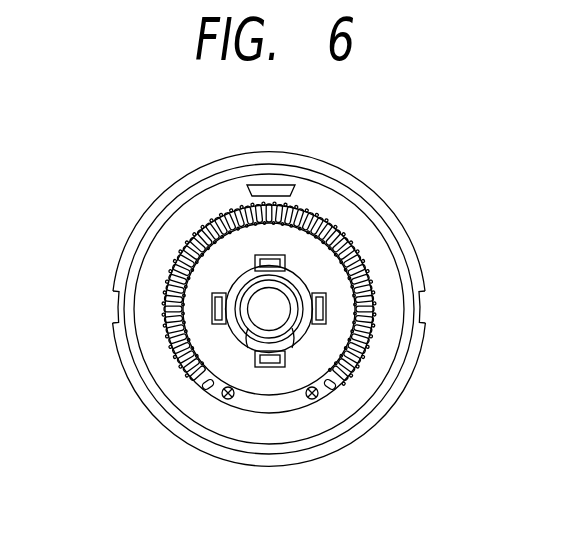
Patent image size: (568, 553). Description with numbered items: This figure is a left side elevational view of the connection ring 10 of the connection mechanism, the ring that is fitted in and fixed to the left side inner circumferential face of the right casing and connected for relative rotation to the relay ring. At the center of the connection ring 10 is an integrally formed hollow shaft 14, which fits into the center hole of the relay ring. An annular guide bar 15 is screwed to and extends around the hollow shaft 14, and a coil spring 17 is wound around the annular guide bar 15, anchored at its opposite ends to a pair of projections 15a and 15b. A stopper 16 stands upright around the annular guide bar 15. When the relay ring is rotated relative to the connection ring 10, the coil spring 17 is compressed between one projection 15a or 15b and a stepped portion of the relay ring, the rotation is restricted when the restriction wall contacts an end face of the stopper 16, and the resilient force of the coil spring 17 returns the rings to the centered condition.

The connection ring 10 is at (424, 227).
The hollow shaft 14 is at (247, 276).
The annular guide bar 15 is at (162, 326).
The projection 15a is at (203, 387).
The projection 15b is at (332, 386).
The stopper 16 is at (275, 185).
The coil spring 17 is at (183, 249).